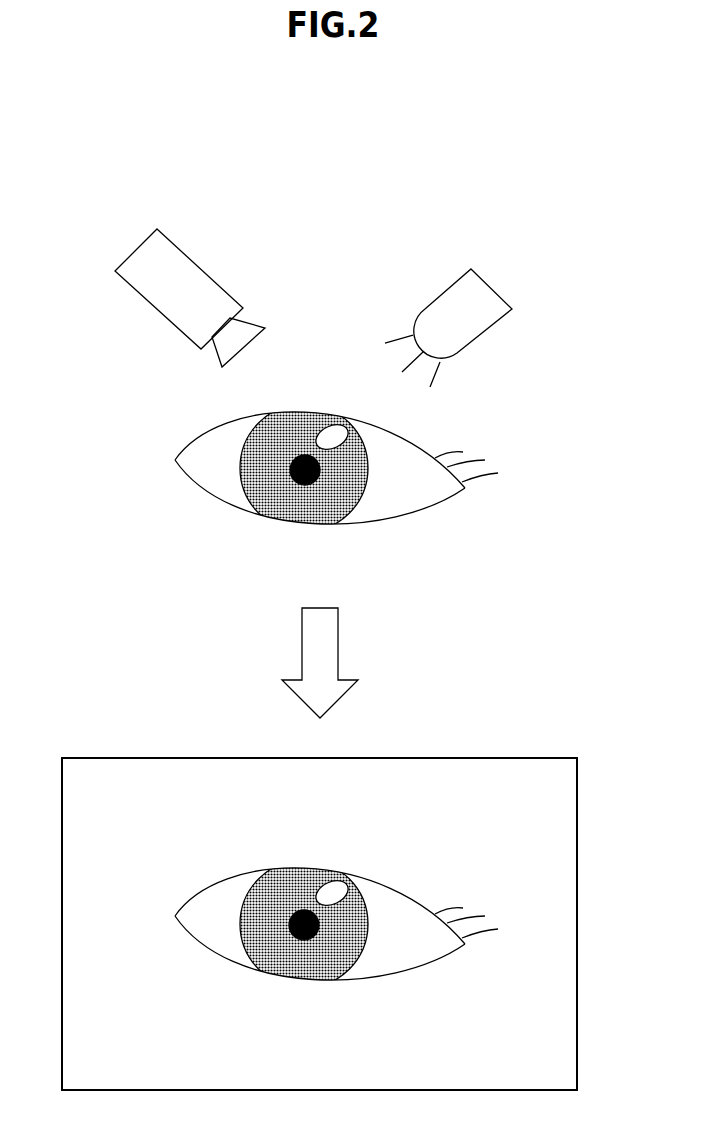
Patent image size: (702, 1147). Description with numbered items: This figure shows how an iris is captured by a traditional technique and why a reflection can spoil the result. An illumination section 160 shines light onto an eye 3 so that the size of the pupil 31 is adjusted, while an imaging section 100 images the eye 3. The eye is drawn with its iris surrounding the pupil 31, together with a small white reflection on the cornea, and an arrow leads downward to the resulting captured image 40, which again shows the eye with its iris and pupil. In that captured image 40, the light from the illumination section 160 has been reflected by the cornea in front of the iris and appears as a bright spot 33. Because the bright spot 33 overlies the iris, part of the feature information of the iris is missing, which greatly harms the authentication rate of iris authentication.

The imaging section 100 is at (133, 250).
The illumination section 160 is at (492, 283).
The eye 3 is at (308, 487).
The pupil 31 is at (307, 485).
The bright spot 33 is at (359, 860).
The captured image 40 is at (497, 757).